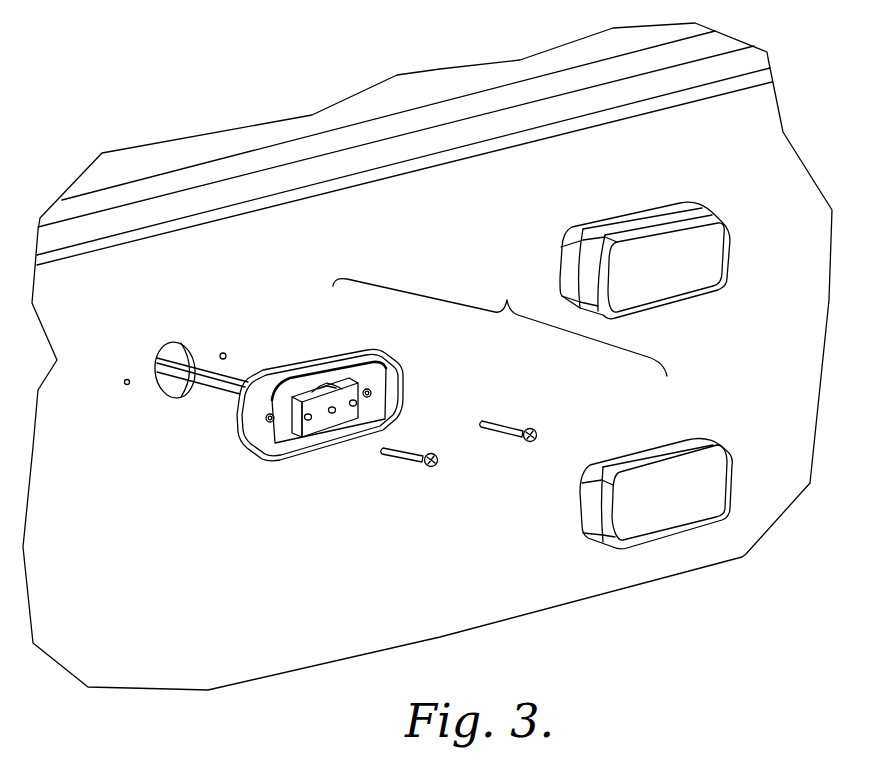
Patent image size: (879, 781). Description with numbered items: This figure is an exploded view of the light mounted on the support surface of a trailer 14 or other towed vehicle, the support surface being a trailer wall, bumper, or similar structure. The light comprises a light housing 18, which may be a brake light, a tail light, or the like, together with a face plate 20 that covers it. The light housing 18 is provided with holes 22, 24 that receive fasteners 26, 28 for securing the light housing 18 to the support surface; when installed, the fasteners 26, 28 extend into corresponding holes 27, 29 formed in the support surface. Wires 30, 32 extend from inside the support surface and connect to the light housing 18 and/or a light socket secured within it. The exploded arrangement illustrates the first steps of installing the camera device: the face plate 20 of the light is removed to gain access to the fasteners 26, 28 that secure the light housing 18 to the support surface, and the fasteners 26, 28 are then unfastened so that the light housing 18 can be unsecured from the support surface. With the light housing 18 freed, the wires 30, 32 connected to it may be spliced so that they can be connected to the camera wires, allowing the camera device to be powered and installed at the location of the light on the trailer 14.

The trailer 14 is at (293, 182).
The light housing 18 is at (327, 357).
The face plate 20 is at (690, 440).
The hole 22 is at (268, 422).
The hole 24 is at (372, 392).
The fastener 26 is at (405, 465).
The hole 27 is at (125, 384).
The fastener 28 is at (512, 423).
The hole 29 is at (227, 355).
The wire 30 is at (202, 392).
The wire 32 is at (201, 369).